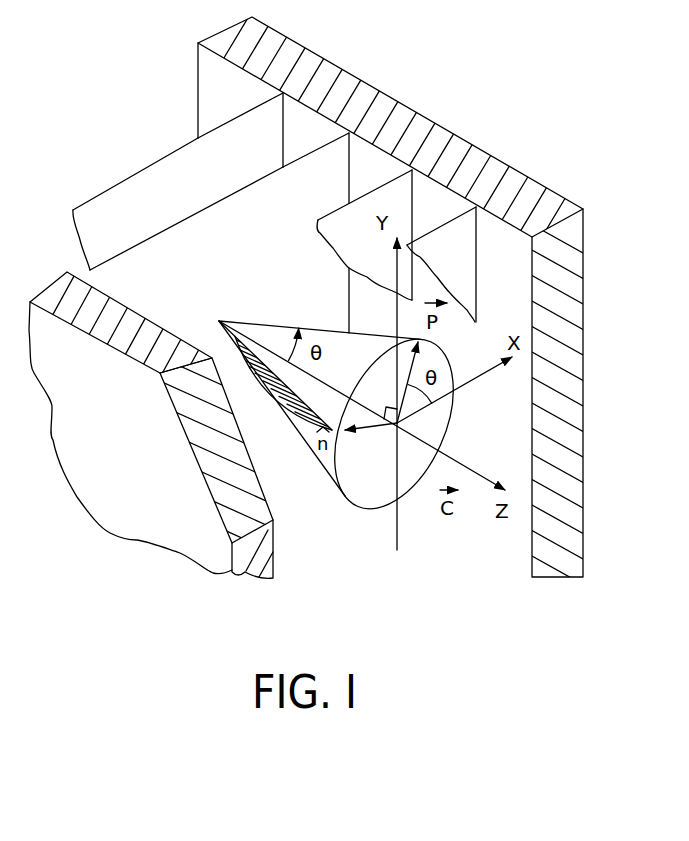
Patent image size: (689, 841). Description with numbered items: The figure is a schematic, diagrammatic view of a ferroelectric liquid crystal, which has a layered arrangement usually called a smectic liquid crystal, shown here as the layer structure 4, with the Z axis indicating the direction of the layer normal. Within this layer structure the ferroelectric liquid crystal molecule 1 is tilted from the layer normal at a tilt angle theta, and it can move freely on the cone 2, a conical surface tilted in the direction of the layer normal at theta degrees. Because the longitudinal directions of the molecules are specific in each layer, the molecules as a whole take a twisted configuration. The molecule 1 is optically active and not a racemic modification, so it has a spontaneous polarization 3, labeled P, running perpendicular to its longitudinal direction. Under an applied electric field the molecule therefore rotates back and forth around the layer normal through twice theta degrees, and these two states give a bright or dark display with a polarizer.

The ferroelectric liquid crystal molecule 1 is at (291, 424).
The cone 2 is at (364, 508).
The spontaneous polarization 3 is at (457, 322).
The layer structure 4 is at (320, 128).